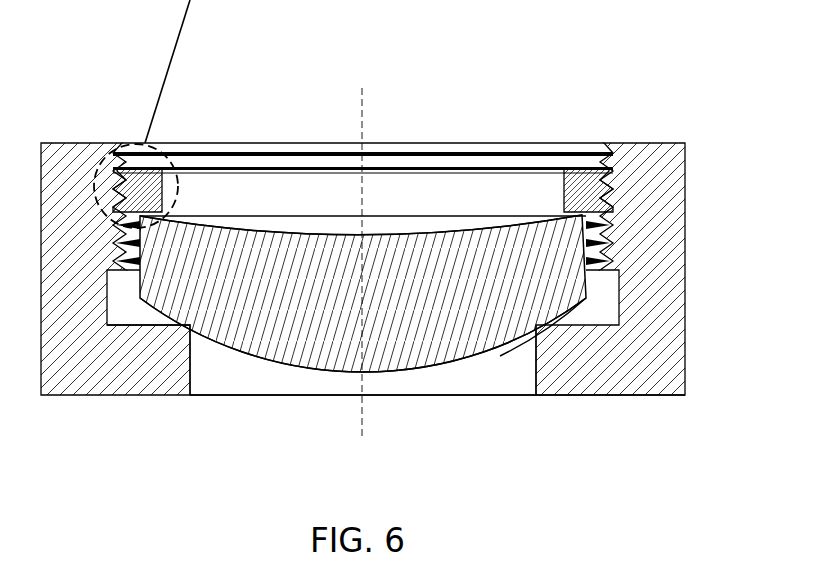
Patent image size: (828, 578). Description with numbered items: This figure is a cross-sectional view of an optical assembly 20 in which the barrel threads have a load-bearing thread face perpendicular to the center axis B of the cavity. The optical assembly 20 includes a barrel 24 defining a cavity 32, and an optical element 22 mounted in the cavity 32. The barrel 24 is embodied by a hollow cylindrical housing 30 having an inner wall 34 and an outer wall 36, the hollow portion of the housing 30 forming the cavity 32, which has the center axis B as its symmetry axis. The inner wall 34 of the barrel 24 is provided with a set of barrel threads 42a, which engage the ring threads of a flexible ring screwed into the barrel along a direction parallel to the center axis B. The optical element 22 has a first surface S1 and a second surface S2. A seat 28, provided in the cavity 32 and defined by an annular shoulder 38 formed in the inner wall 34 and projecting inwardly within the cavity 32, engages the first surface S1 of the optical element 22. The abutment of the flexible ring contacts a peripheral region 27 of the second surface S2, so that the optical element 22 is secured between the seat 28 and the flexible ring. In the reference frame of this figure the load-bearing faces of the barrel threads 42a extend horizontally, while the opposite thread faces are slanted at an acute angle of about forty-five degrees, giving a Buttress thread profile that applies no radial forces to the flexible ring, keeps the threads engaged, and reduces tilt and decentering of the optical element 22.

The optical assembly 20 is at (537, 78).
The optical element 22 is at (460, 340).
The barrel 24 is at (398, 269).
The peripheral region 27 is at (148, 213).
The seat 28 is at (521, 345).
The hollow cylindrical housing 30 is at (672, 265).
The cavity 32 is at (292, 380).
The inner wall 34 is at (618, 307).
The outer wall 36 is at (685, 376).
The annular shoulder 38 is at (182, 338).
The barrel threads 42a is at (612, 181).
The first surface S1 is at (395, 372).
The second surface S2 is at (453, 235).
The center axis B is at (363, 113).